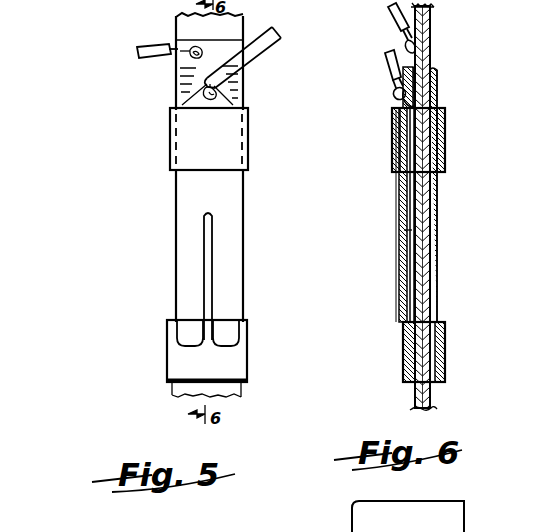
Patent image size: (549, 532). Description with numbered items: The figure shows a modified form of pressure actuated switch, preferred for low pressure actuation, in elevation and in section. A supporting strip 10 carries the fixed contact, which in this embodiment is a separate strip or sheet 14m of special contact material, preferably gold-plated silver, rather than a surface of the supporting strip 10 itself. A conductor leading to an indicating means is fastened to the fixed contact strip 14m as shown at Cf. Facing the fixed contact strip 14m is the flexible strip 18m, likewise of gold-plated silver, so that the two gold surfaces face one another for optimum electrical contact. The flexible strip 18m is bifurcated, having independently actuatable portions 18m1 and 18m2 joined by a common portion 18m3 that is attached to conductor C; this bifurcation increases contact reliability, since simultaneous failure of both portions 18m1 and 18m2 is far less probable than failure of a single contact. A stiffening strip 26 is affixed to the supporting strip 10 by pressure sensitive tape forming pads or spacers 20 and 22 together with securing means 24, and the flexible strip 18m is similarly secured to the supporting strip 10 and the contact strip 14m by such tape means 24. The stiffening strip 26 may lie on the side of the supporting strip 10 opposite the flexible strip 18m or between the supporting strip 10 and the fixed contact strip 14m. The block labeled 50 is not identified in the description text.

In FIG. 5, the supporting strip 10 is at (175, 22).
In FIG. 6, the supporting strip 10 is at (431, 28).
In FIG. 5, the conductor fastening Cf is at (135, 52).
In FIG. 6, the conductor fastening Cf is at (394, 18).
In FIG. 5, the conductor C is at (274, 34).
In FIG. 6, the conductor C is at (386, 63).
In FIG. 5, the fixed contact strip 14m is at (260, 59).
In FIG. 6, the fixed contact strip 14m is at (420, 230).
In FIG. 5, the common portion 18m3 is at (177, 97).
In FIG. 5, the securing means 24 is at (169, 153).
In FIG. 6, the securing means 24 is at (392, 155).
In FIG. 5, the flexible strip 18m is at (160, 217).
In FIG. 6, the flexible strip 18m is at (390, 292).
In FIG. 5, the first independently actuatable portion 18m1 is at (178, 283).
In FIG. 5, the second independently actuatable portion 18m2 is at (234, 284).
In FIG. 5, the pad or spacer 22 is at (168, 372).
In FIG. 6, the pad or spacer 22 is at (430, 382).
In FIG. 6, the pad or spacer 20 is at (399, 180).
In FIG. 6, the stiffening strip 26 is at (432, 270).
In FIG. 6, the high level indicator block 50 is at (466, 504).